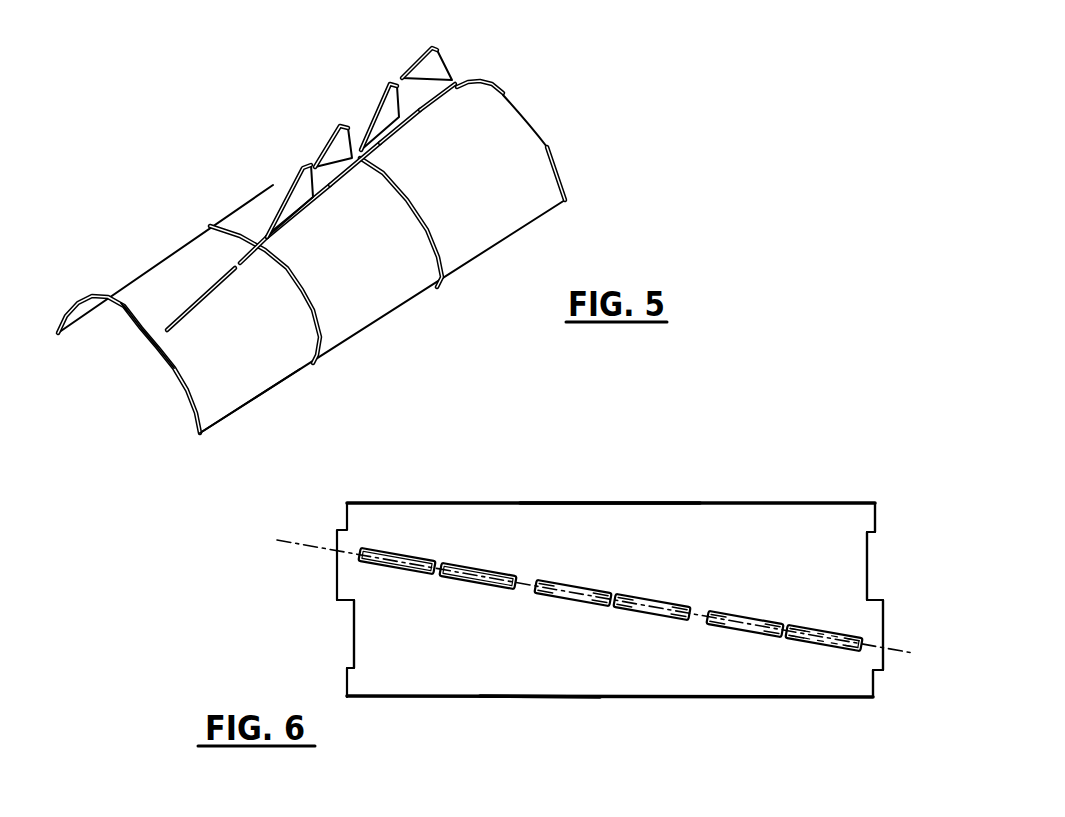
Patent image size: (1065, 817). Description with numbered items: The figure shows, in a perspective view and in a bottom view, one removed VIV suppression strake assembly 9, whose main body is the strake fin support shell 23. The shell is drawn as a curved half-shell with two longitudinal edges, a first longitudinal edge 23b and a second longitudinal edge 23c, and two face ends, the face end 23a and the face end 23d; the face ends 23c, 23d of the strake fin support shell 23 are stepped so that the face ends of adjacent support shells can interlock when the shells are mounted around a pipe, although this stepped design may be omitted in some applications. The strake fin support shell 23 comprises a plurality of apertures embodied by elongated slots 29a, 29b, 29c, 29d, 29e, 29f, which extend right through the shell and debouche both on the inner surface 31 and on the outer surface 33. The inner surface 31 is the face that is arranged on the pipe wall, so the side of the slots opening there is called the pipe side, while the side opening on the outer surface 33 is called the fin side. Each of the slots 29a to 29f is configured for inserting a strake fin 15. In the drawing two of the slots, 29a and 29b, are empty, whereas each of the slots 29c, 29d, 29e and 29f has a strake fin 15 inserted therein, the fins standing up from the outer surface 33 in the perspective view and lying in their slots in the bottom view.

In FIG. 5, the VIV suppression strake assembly 9 is at (123, 160).
In FIG. 5, the strake fin 15 is at (267, 187).
In FIG. 6, the strake fin 15 is at (815, 640).
In FIG. 5, the strake fin support shell 23 is at (333, 330).
In FIG. 6, the strake fin support shell 23 is at (313, 620).
In FIG. 5, the first end of shell 23a is at (63, 340).
In FIG. 5, the first longitudinal edge of shell 23b is at (220, 440).
In FIG. 6, the first longitudinal edge of shell 23b is at (622, 503).
In FIG. 5, the face end 23c is at (173, 363).
In FIG. 6, the face end 23c is at (352, 647).
In FIG. 5, the face end 23d is at (538, 137).
In FIG. 6, the face end 23d is at (832, 483).
In FIG. 5, the elongated slot 29a is at (183, 310).
In FIG. 6, the elongated slot 29a is at (393, 560).
In FIG. 5, the elongated slot 29b is at (230, 272).
In FIG. 6, the elongated slot 29b is at (483, 567).
In FIG. 5, the elongated slot 29c is at (293, 227).
In FIG. 6, the elongated slot 29c is at (575, 590).
In FIG. 5, the elongated slot 29d is at (337, 190).
In FIG. 6, the elongated slot 29d is at (643, 607).
In FIG. 5, the elongated slot 29e is at (395, 140).
In FIG. 6, the elongated slot 29e is at (747, 627).
In FIG. 5, the elongated slot 29f is at (450, 117).
In FIG. 6, the elongated slot 29f is at (827, 637).
In FIG. 6, the inner surface 31 is at (667, 522).
In FIG. 5, the outer surface 33 is at (497, 123).